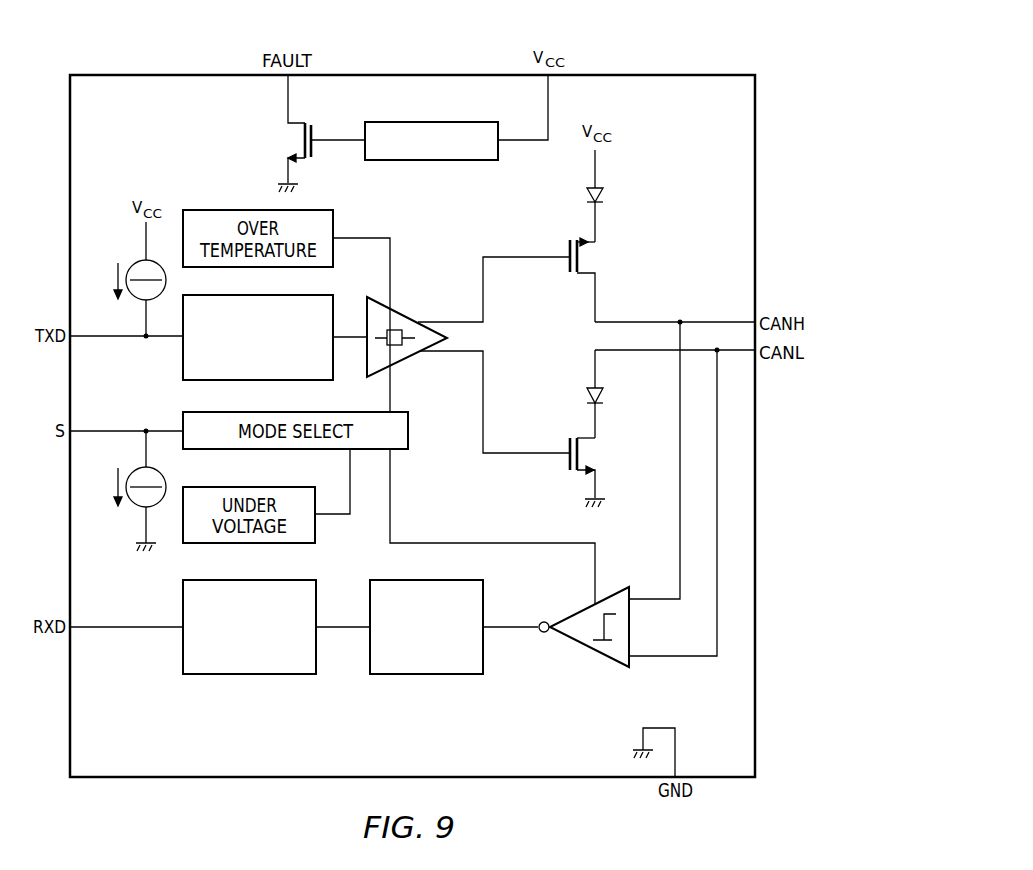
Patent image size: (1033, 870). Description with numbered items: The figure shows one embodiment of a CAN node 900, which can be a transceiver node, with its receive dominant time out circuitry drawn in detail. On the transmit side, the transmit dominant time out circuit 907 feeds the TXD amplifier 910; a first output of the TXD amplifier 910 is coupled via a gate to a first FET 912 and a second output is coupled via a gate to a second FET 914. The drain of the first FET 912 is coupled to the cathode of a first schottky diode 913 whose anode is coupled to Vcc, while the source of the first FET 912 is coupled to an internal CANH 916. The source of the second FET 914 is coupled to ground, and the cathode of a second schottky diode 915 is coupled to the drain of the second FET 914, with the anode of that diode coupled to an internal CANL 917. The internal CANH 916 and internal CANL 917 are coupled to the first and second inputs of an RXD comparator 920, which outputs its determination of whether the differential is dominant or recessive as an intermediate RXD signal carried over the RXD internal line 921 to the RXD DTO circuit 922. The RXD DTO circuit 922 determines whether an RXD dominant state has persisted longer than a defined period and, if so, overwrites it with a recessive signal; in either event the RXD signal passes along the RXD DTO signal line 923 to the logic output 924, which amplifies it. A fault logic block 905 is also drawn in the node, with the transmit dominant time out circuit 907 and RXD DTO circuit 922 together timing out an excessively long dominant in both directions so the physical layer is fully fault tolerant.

The CAN node 900 is at (668, 58).
The fault logic 905 is at (430, 161).
The transmit dominant time out circuit 907 is at (183, 358).
The TXD amplifier 910 is at (398, 314).
The first FET 912 is at (567, 250).
The first schottky diode 913 is at (605, 196).
The second FET 914 is at (567, 462).
The second schottky diode 915 is at (587, 398).
The internal CANH 916 is at (638, 319).
The internal CANL 917 is at (638, 353).
The RXD comparator 920 is at (585, 608).
The RXD internal line 921 is at (510, 630).
The RXD DTO circuit 922 is at (425, 675).
The RXD DTO signal line 923 is at (343, 630).
The logic output 924 is at (253, 675).